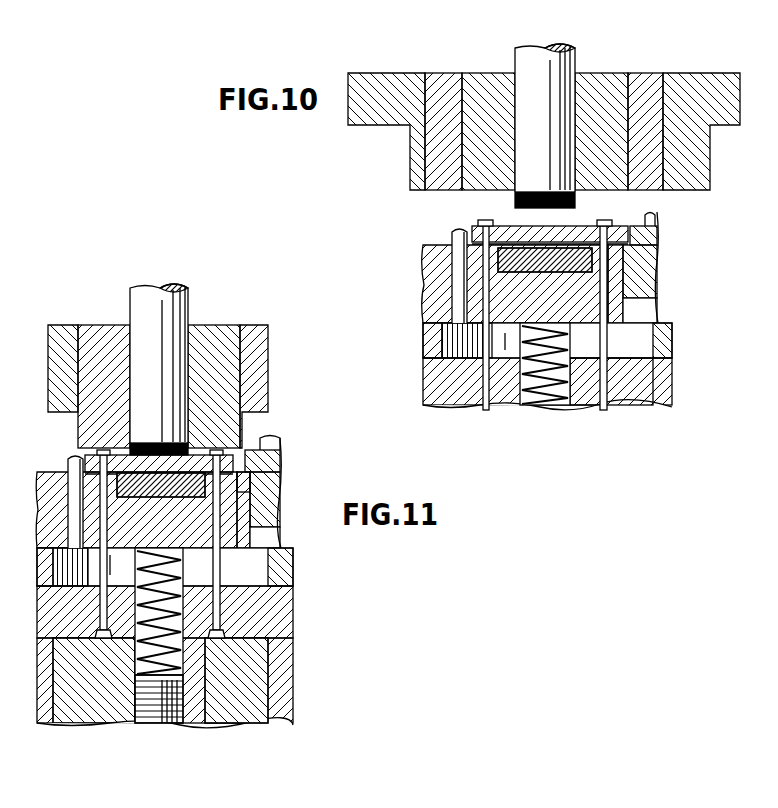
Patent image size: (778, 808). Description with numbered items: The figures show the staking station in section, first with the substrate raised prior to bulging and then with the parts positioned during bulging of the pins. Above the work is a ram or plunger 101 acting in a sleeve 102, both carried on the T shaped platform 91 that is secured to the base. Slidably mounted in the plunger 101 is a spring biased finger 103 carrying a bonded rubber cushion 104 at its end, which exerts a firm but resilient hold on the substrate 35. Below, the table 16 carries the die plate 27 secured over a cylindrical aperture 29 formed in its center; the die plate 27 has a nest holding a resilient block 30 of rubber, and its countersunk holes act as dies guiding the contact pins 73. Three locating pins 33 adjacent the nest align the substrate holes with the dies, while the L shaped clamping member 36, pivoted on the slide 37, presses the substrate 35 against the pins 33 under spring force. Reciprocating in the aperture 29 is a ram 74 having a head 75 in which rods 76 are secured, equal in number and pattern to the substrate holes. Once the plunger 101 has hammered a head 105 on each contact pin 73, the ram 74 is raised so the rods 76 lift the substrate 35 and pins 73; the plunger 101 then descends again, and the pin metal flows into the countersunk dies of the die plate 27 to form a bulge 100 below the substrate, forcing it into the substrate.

In FIG. 10, the finger 103 is at (545, 46).
In FIG. 11, the finger 103 is at (135, 300).
In FIG. 10, the plunger 101 is at (600, 80).
In FIG. 11, the plunger 101 is at (215, 327).
In FIG. 10, the sleeve 102 is at (645, 85).
In FIG. 11, the sleeve 102 is at (262, 345).
In FIG. 10, the T shaped platform 91 is at (715, 92).
In FIG. 10, the cushion 104 is at (513, 200).
In FIG. 10, the substrate 35 is at (575, 232).
In FIG. 11, the substrate 35 is at (200, 455).
In FIG. 10, the head 105 is at (607, 226).
In FIG. 10, the L shaped clamping member 36 is at (650, 236).
In FIG. 11, the L shaped clamping member 36 is at (282, 466).
In FIG. 10, the slide 37 is at (645, 270).
In FIG. 11, the slide 37 is at (275, 505).
In FIG. 11, the bulge 100 is at (232, 478).
In FIG. 10, the pins 33 is at (455, 240).
In FIG. 11, the pins 33 is at (68, 460).
In FIG. 10, the contact pin 73 is at (483, 265).
In FIG. 11, the contact pin 73 is at (103, 500).
In FIG. 10, the resilient block 30 is at (515, 274).
In FIG. 11, the resilient block 30 is at (140, 492).
In FIG. 10, the rods 76 is at (598, 298).
In FIG. 11, the rods 76 is at (218, 562).
In FIG. 10, the die plate 27 is at (585, 325).
In FIG. 11, the die plate 27 is at (200, 548).
In FIG. 10, the cylindrical aperture 29 is at (640, 340).
In FIG. 11, the cylindrical aperture 29 is at (265, 566).
In FIG. 10, the table 16 is at (660, 372).
In FIG. 11, the table 16 is at (275, 660).
In FIG. 10, the head 75 is at (625, 400).
In FIG. 11, the head 75 is at (255, 612).
In FIG. 11, the ram 74 is at (240, 705).